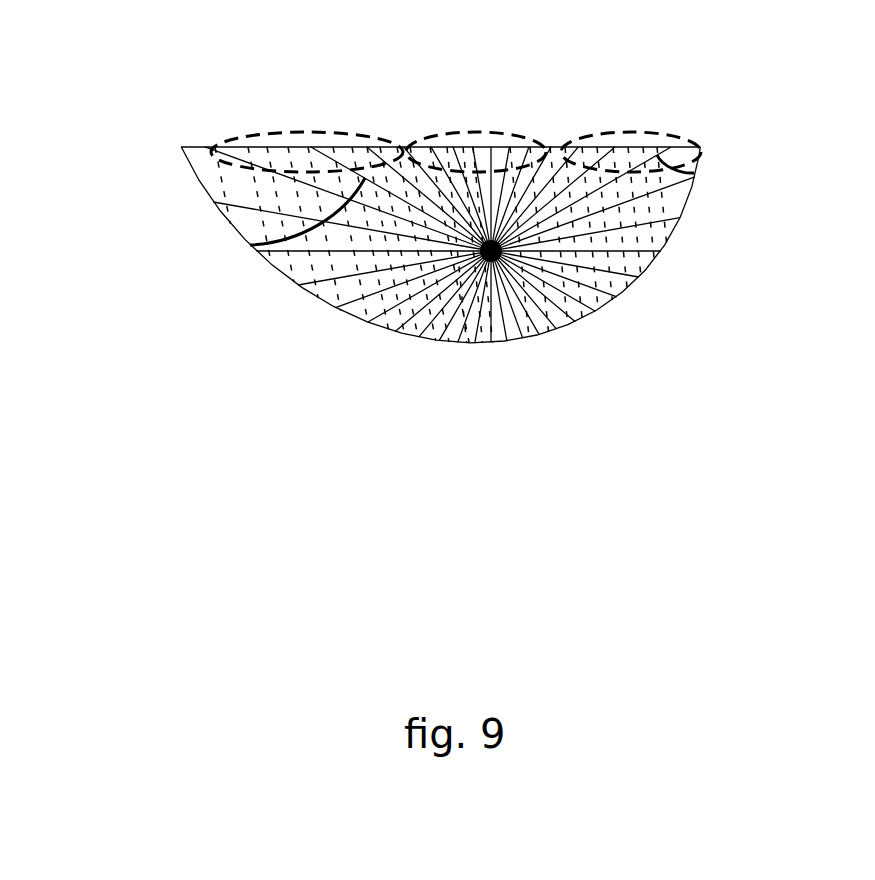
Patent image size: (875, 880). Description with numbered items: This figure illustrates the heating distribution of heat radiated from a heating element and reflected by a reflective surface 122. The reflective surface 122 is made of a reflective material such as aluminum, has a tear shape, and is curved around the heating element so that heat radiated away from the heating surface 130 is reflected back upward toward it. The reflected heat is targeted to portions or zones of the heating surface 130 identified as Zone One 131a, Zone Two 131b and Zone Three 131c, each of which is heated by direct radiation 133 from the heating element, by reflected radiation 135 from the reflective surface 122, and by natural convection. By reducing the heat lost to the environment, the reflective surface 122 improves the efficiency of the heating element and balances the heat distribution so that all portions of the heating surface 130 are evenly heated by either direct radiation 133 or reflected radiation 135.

The reflective surface 122 is at (377, 332).
The heating surface 130 is at (549, 128).
The Zone One 131a is at (297, 120).
The Zone Two 131b is at (461, 120).
The Zone Three 131c is at (615, 120).
The direct radiation 133 is at (250, 245).
The reflected radiation 135 is at (338, 297).